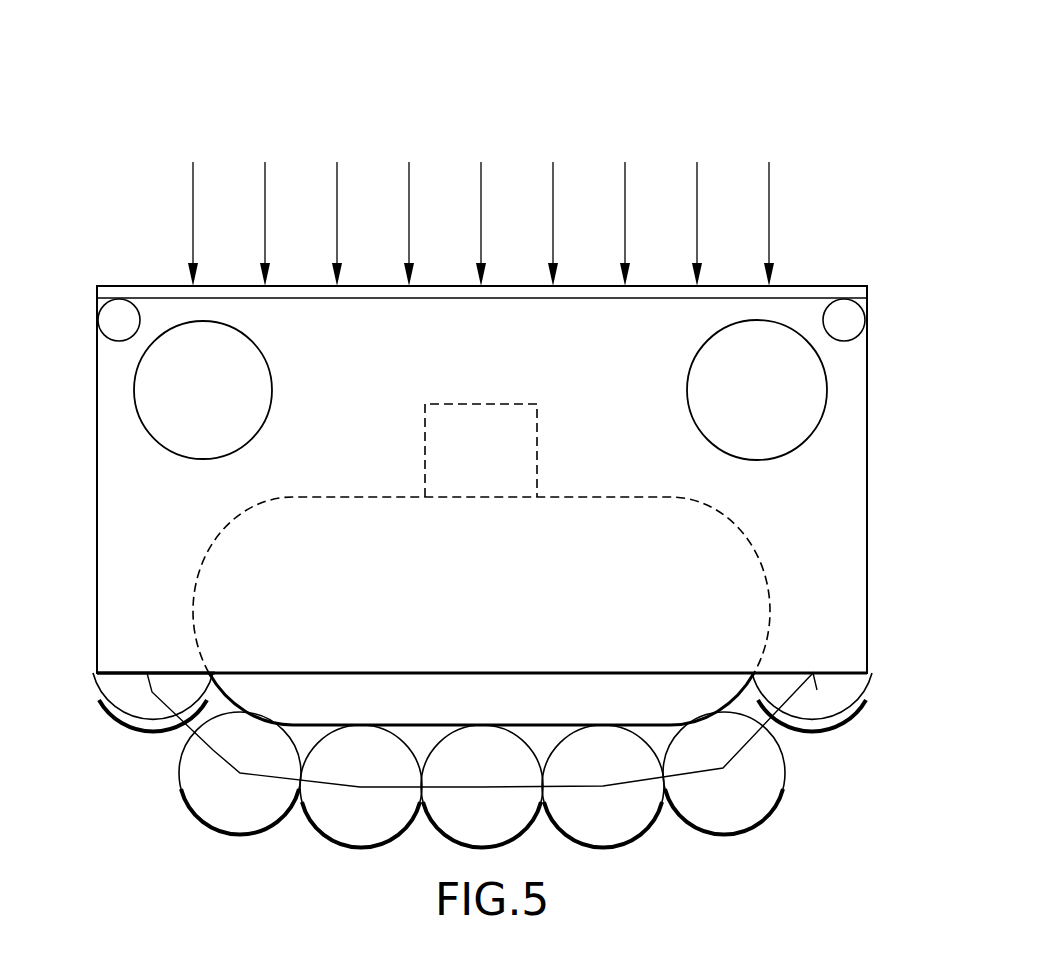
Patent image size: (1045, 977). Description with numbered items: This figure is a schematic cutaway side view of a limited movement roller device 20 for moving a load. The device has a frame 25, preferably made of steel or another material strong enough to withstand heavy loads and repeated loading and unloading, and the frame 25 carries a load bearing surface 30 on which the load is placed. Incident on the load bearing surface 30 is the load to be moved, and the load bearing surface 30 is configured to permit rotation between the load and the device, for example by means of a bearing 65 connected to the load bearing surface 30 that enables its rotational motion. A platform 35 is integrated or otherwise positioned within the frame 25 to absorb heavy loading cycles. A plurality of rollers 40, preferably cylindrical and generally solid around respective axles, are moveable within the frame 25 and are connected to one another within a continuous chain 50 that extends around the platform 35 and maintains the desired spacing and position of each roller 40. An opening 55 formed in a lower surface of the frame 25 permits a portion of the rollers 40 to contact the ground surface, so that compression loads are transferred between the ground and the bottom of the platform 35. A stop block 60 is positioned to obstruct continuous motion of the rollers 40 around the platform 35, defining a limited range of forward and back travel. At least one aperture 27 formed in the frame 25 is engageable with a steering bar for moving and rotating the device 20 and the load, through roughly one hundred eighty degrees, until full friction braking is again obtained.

The limited movement roller device 20 is at (818, 101).
The frame 25 is at (827, 481).
The aperture 27 is at (791, 323).
The load bearing surface 30 is at (225, 286).
The platform 35 is at (744, 618).
The rollers 40 is at (832, 748).
The continuous chain 50 is at (217, 748).
The opening 55 is at (126, 695).
The stop block 60 is at (455, 432).
The bearing 65 is at (112, 322).